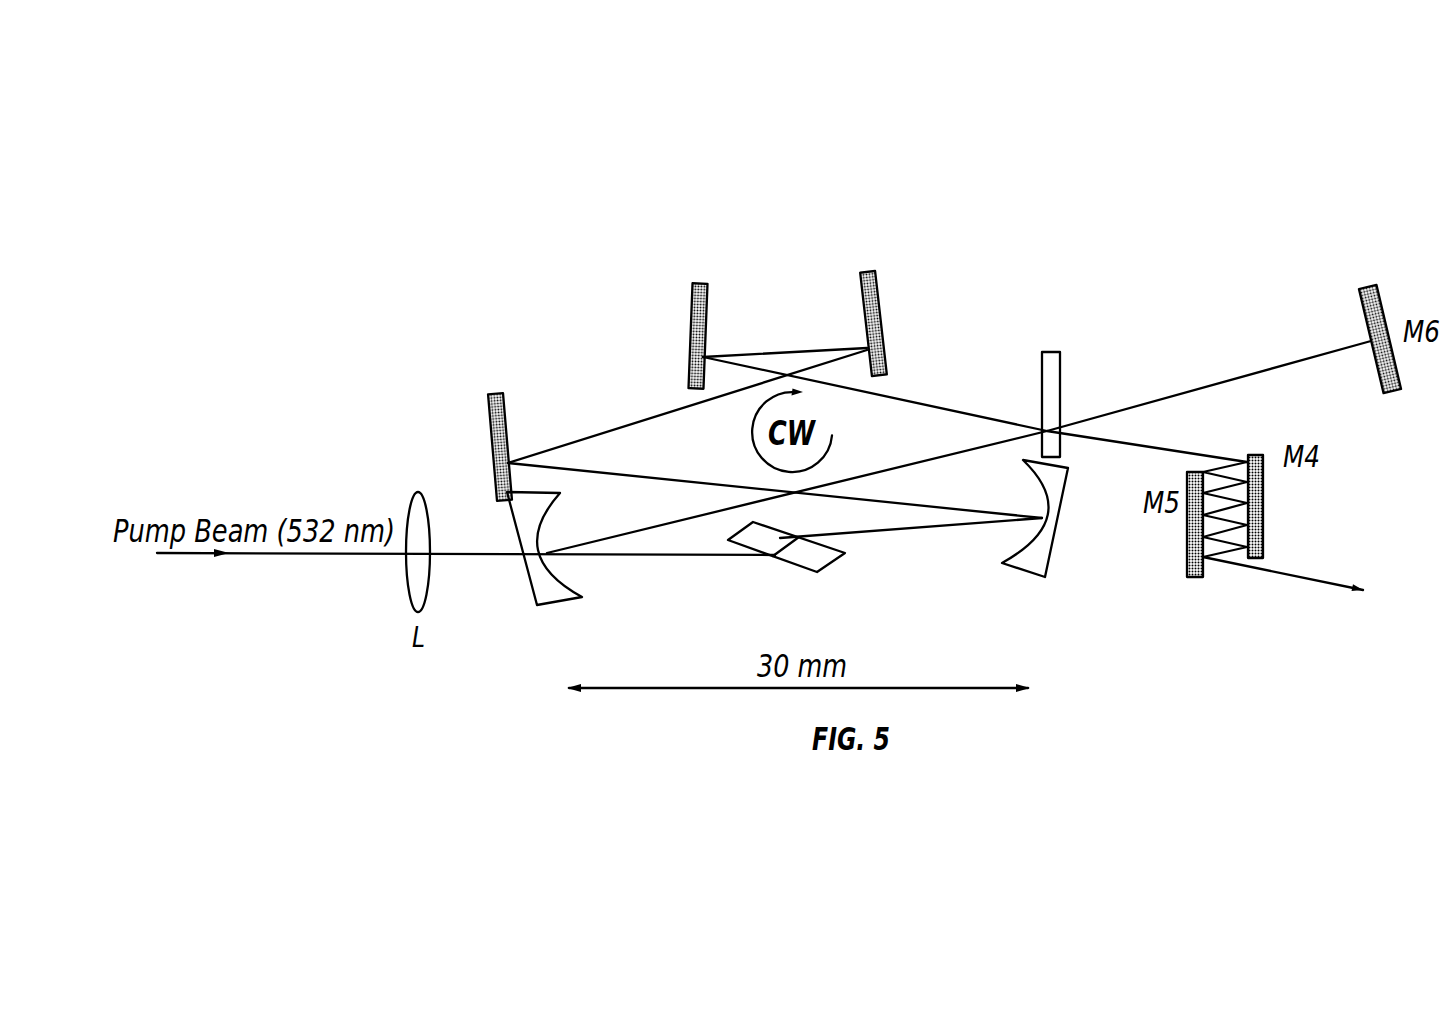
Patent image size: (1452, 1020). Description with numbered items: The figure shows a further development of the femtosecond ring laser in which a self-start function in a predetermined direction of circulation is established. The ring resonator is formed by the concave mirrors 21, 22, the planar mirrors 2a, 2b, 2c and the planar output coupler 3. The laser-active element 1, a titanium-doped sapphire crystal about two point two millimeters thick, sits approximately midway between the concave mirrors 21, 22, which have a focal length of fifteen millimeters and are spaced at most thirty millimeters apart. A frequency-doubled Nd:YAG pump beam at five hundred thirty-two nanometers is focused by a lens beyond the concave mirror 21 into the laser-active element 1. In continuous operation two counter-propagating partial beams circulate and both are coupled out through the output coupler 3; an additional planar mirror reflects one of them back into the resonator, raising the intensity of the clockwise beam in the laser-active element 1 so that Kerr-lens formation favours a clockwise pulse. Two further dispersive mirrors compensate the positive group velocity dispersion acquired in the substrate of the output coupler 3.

The laser-active element 1 is at (818, 517).
The planar mirror 2a is at (487, 390).
The planar mirror 2b is at (690, 312).
The planar mirror 2c is at (880, 288).
The planar output coupler 3 is at (1070, 334).
The concave mirror 21 is at (521, 590).
The concave mirror 22 is at (1065, 557).